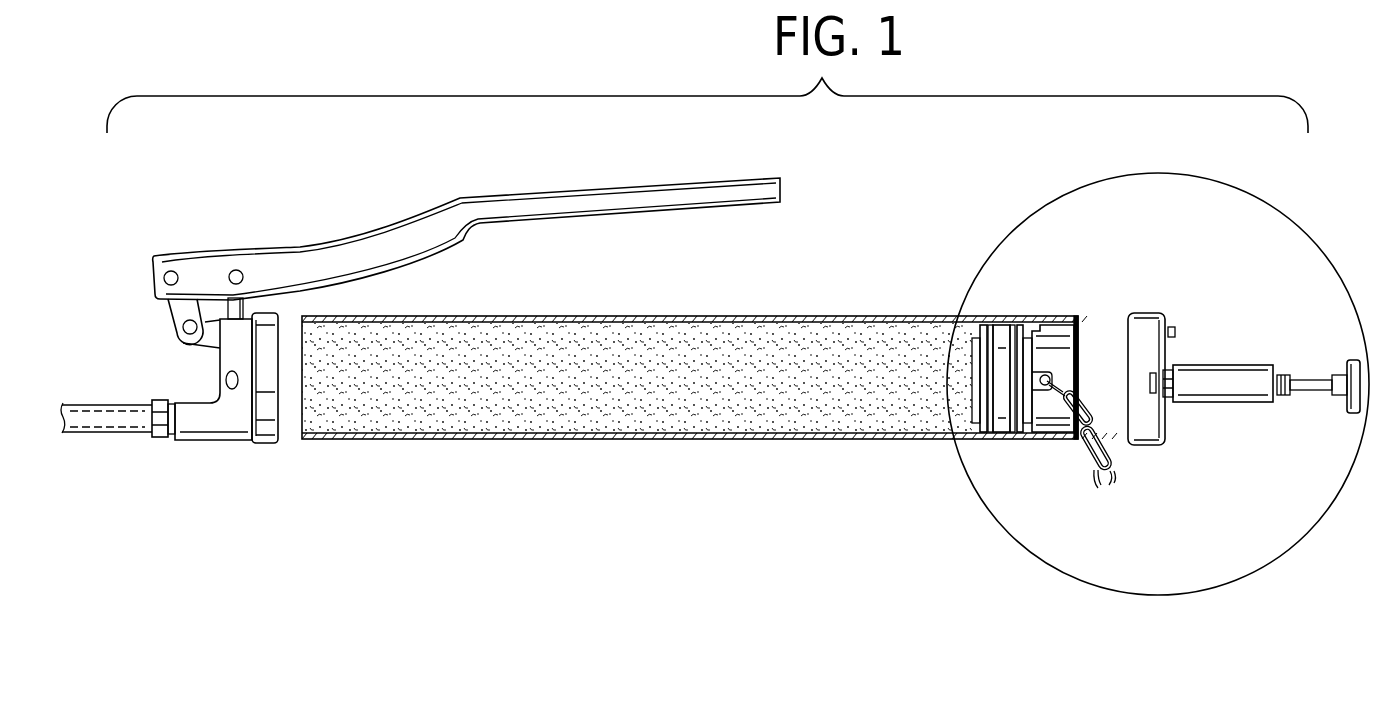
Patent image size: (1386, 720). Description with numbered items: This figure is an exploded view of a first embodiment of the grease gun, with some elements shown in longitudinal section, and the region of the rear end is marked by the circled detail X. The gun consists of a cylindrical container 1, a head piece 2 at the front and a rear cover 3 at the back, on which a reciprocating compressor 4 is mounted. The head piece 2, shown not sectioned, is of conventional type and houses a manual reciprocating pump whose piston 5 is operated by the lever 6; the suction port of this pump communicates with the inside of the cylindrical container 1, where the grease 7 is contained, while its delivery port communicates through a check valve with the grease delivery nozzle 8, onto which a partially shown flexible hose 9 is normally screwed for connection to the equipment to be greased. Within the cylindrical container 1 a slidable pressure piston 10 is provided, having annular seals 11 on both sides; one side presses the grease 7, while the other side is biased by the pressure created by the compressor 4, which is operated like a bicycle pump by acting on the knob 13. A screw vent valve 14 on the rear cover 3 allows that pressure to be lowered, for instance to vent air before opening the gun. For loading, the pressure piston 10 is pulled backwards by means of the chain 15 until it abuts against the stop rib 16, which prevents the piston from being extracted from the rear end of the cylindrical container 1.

The cylindrical container 1 is at (608, 317).
The head piece 2 is at (208, 251).
The rear cover 3 is at (1147, 313).
The reciprocating compressor 4 is at (1220, 388).
The piston 5 is at (248, 310).
The lever 6 is at (410, 233).
The grease 7 is at (647, 387).
The grease delivery nozzle 8 is at (170, 432).
The flexible hose 9 is at (92, 420).
The pressure piston 10 is at (1000, 340).
The annular seals 11 is at (1022, 443).
The knob 13 is at (1340, 377).
The screw vent valve 14 is at (1178, 330).
The chain 15 is at (1117, 473).
The stop rib 16 is at (1034, 325).
The detail region X is at (1173, 173).